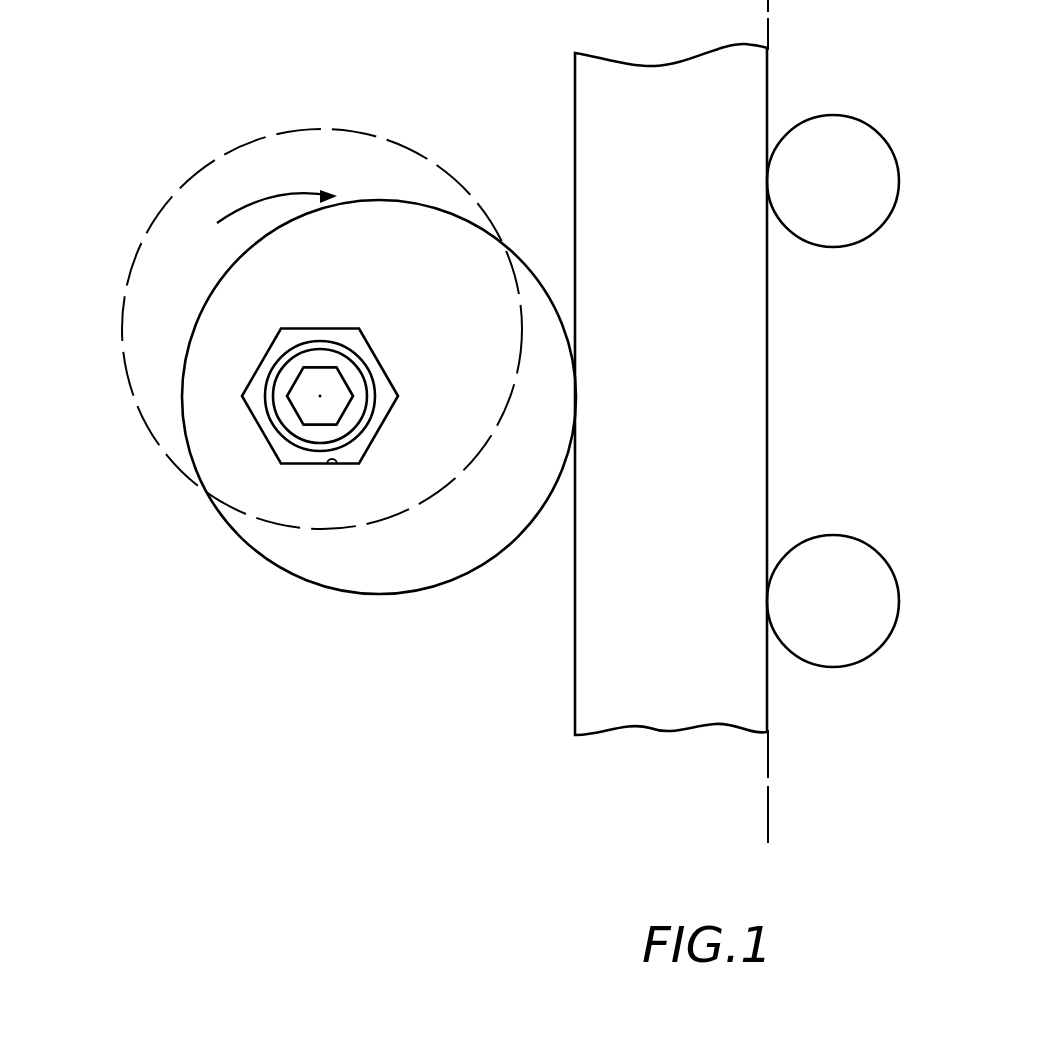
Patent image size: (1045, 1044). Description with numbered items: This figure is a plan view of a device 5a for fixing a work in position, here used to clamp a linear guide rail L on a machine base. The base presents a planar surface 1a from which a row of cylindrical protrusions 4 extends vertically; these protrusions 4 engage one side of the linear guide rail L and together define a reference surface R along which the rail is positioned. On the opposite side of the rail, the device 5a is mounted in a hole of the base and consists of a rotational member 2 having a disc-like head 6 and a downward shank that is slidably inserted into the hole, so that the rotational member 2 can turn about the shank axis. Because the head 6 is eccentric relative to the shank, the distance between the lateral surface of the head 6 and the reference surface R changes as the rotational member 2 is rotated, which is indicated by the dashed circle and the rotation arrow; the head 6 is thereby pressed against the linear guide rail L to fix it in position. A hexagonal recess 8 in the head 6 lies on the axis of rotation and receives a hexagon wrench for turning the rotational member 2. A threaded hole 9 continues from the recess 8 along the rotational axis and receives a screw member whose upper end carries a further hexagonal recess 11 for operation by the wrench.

The planar surface 1a is at (511, 41).
The rotational member 2 is at (216, 277).
The cylindrical protrusions 4 is at (867, 140).
The device for fixing a work in position 5a is at (188, 503).
The disc-like head 6 is at (190, 452).
The hexagonal recess 8 is at (337, 470).
The threaded hole 9 is at (300, 432).
The hexagonal recess 11 is at (302, 383).
The linear guide rail L is at (752, 337).
The reference surface R is at (768, 785).